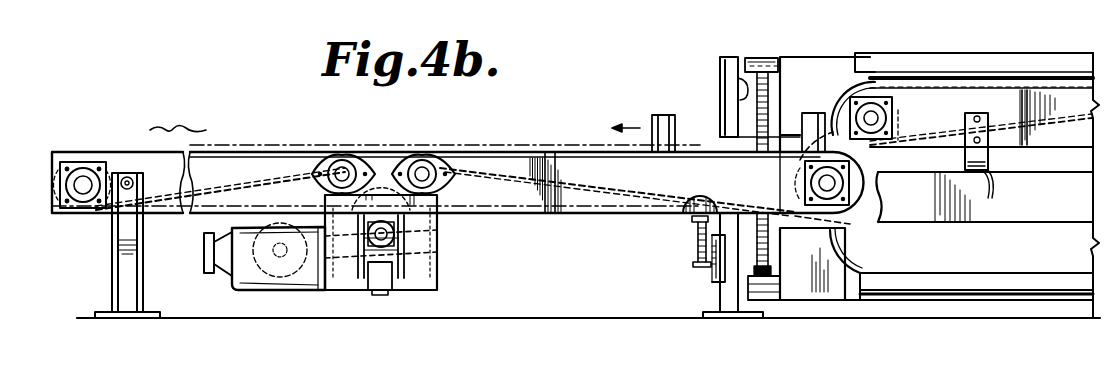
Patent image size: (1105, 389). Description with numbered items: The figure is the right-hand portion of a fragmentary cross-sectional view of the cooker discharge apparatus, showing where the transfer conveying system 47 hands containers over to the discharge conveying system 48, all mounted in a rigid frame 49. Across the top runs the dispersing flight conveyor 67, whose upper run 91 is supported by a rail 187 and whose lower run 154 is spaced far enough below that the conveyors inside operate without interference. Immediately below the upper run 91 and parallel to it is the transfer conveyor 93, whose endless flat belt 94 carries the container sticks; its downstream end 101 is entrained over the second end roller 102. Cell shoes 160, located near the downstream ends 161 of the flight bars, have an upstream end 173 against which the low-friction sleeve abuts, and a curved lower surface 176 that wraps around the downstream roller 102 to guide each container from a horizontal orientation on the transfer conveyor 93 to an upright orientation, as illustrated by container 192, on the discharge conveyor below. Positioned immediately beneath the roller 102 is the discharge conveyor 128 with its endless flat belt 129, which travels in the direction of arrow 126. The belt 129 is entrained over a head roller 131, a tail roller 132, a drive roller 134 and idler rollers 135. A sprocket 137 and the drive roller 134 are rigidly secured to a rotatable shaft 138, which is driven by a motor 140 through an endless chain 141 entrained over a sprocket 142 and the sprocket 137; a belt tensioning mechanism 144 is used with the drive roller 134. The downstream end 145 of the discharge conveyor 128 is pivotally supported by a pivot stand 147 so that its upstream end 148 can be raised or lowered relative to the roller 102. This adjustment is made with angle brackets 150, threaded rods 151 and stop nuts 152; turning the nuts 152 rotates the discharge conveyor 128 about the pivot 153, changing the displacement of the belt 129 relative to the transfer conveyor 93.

The transfer conveying system 47 is at (1062, 183).
The discharge conveying system 48 is at (261, 90).
The frame 49 is at (720, 72).
The dispersing flight conveyor 67 is at (1050, 60).
The upper run 91 is at (1086, 60).
The transfer conveyor 93 is at (1010, 90).
The endless flat belt 94 is at (963, 90).
The downstream end 101 is at (897, 90).
The second end roller 102 is at (971, 132).
The arrow 126 is at (290, 129).
The discharge conveyor 128 is at (589, 100).
The endless flat belt 129 is at (533, 153).
The head roller 131 is at (845, 218).
The tail roller 132 is at (84, 212).
The drive roller 134 is at (412, 243).
The idler rollers 135 is at (342, 156).
The sprocket 137 is at (398, 226).
The rotatable shaft 138 is at (388, 238).
The motor 140 is at (236, 280).
The endless chain 141 is at (334, 290).
The sprocket 142 is at (278, 280).
The belt tensioning mechanism 144 is at (390, 290).
The downstream end 145 is at (80, 158).
The pivot stand 147 is at (112, 278).
The upstream end 148 is at (795, 158).
The angle brackets 150 is at (715, 270).
The threaded rods 151 is at (700, 253).
The stop nuts 152 is at (680, 236).
The pivot 153 is at (128, 178).
The lower run 154 is at (986, 275).
The cell shoes 160 is at (808, 58).
The downstream ends 161 is at (762, 57).
The upstream end 173 is at (852, 62).
The curved lower surface 176 is at (840, 96).
The rail 187 is at (735, 100).
The container 192 is at (818, 113).